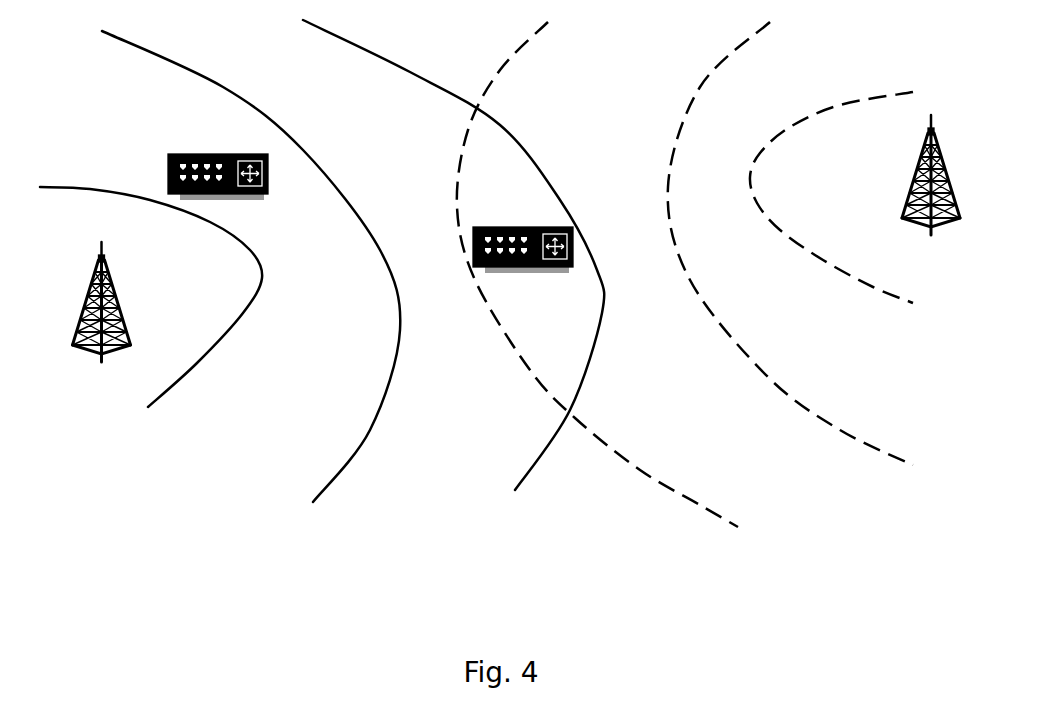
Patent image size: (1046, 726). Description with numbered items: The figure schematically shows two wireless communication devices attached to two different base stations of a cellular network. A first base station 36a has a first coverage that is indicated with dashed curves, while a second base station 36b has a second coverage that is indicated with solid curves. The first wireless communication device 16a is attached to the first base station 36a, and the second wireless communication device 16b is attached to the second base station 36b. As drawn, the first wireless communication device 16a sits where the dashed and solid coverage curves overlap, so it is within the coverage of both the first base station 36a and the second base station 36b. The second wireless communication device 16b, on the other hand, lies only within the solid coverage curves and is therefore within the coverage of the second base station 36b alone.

The second wireless communication device 16b is at (203, 144).
The first wireless communication device 16a is at (520, 216).
The second base station 36b is at (136, 302).
The first base station 36a is at (889, 175).